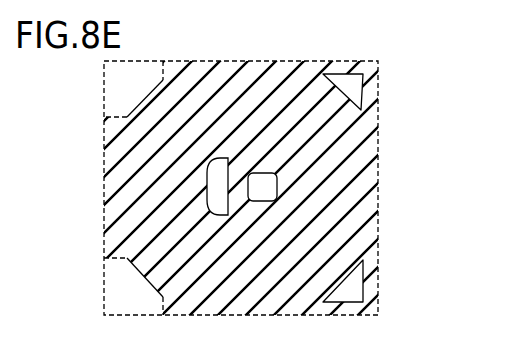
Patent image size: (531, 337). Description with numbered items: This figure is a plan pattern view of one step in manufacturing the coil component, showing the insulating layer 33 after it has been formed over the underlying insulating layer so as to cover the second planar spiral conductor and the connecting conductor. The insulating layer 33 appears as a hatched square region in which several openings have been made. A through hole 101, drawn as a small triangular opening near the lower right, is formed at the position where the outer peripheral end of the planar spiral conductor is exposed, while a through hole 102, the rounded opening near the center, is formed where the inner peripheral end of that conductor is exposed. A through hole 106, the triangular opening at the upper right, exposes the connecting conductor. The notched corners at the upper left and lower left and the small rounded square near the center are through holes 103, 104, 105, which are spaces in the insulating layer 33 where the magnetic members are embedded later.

The insulating layer 33 is at (368, 173).
The through hole 101 is at (355, 287).
The through hole 102 is at (218, 165).
The through hole 103 is at (125, 83).
The through hole 104 is at (122, 290).
The through hole 105 is at (262, 182).
The through hole 106 is at (357, 92).